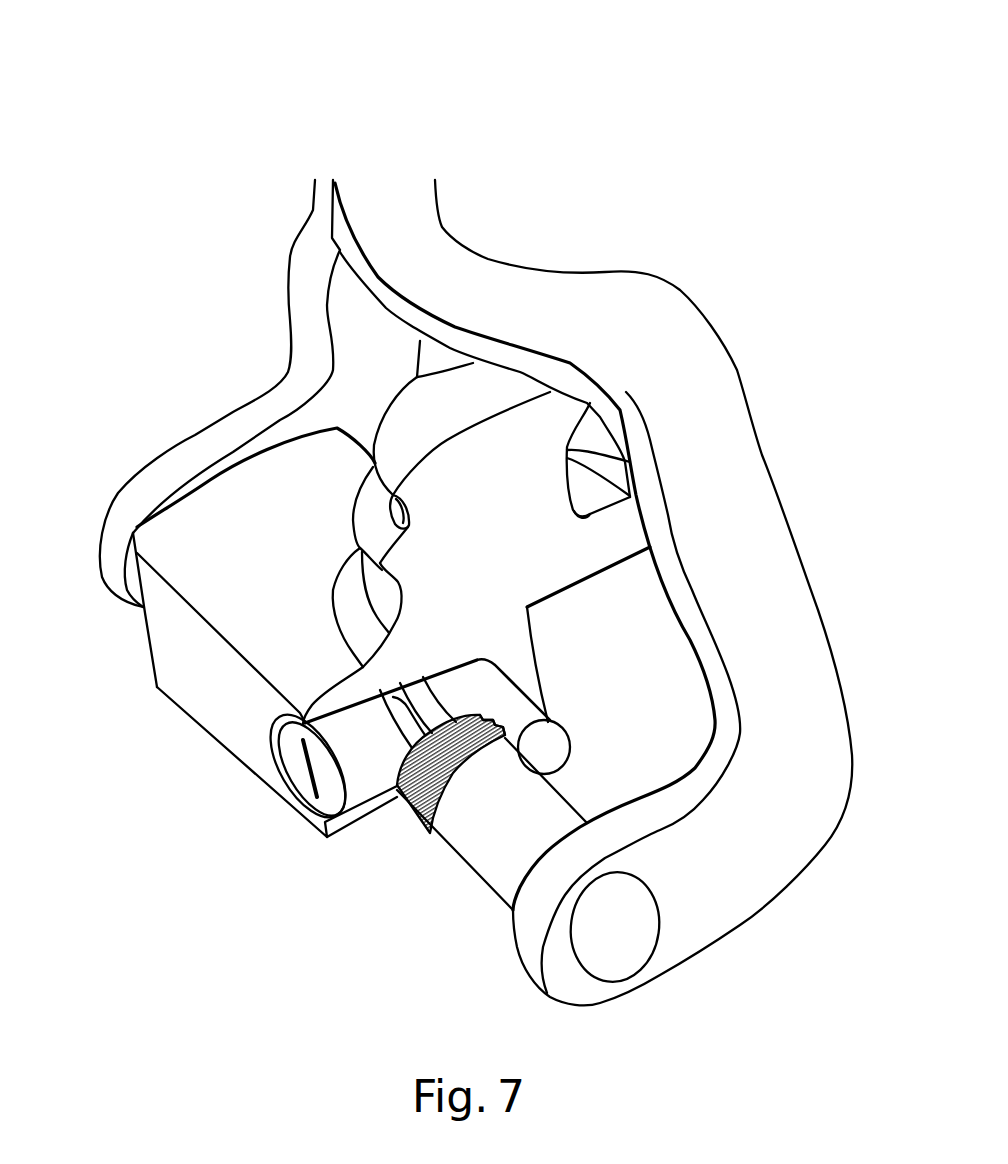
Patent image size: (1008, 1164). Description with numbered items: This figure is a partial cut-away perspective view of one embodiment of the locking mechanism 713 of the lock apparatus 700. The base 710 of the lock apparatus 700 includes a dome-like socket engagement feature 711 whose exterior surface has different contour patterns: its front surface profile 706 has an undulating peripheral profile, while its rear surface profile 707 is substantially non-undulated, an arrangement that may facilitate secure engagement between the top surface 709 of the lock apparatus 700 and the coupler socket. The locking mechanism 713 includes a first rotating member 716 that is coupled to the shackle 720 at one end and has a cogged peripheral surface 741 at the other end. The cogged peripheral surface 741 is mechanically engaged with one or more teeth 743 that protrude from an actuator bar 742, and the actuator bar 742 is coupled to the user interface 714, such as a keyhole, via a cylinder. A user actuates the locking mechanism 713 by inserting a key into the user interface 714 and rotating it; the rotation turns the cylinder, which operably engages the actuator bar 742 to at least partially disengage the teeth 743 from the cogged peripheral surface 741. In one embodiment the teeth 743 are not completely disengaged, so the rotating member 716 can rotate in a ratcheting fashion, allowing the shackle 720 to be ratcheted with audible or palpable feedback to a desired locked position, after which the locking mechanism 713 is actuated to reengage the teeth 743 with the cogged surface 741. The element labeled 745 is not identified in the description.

The lock apparatus 700 is at (106, 64).
The front surface profile 706 is at (337, 628).
The rear surface profile 707 is at (588, 464).
The top surface 709 is at (180, 540).
The base 710 is at (343, 617).
The socket engagement feature 711 is at (410, 417).
The locking mechanism 713 is at (389, 830).
The user interface 714 is at (298, 763).
The first rotating member 716 is at (478, 853).
The shackle 720 is at (767, 536).
The cogged peripheral surface 741 is at (485, 755).
The actuator bar 742 is at (520, 704).
The teeth 743 is at (484, 722).
The spring ring 745 is at (427, 700).